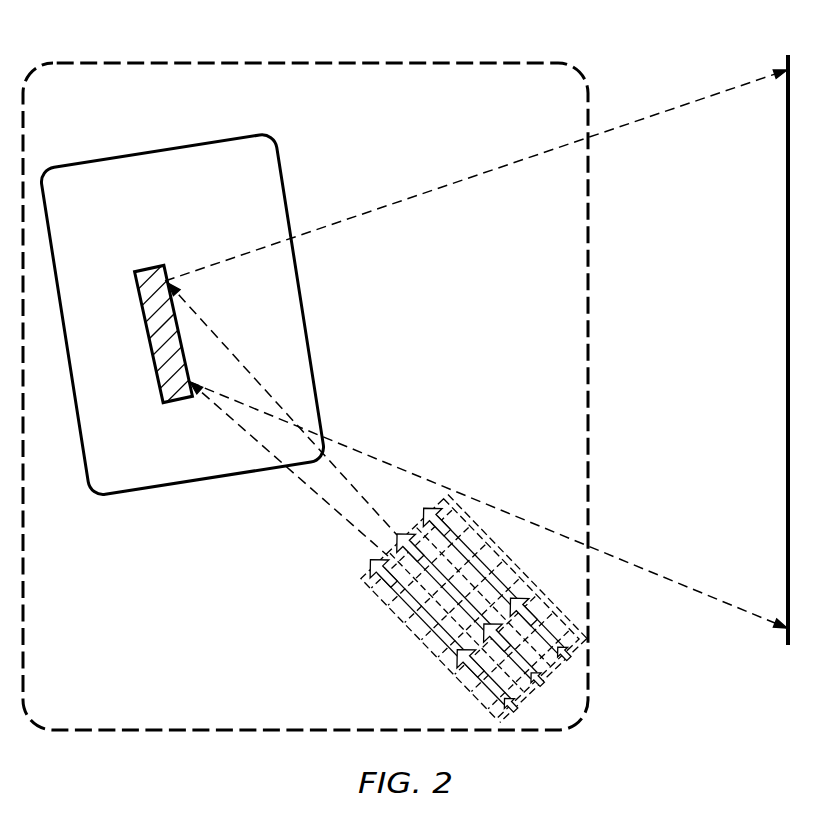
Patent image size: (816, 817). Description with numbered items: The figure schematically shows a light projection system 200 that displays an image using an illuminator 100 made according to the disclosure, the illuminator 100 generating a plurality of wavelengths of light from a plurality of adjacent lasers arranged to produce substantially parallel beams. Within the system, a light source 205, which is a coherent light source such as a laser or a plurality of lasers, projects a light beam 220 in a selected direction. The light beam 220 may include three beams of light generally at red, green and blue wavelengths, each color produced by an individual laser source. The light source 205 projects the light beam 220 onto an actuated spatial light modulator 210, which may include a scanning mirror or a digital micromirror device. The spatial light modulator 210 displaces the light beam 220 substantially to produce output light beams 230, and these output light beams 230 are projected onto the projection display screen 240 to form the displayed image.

The illuminator 100 is at (425, 657).
The light projection system 200 is at (154, 92).
The light source 205 is at (323, 106).
The spatial light modulator 210 is at (147, 268).
The light beam 220 is at (320, 494).
The output light beams 230 is at (458, 183).
The projection display screen 240 is at (768, 246).